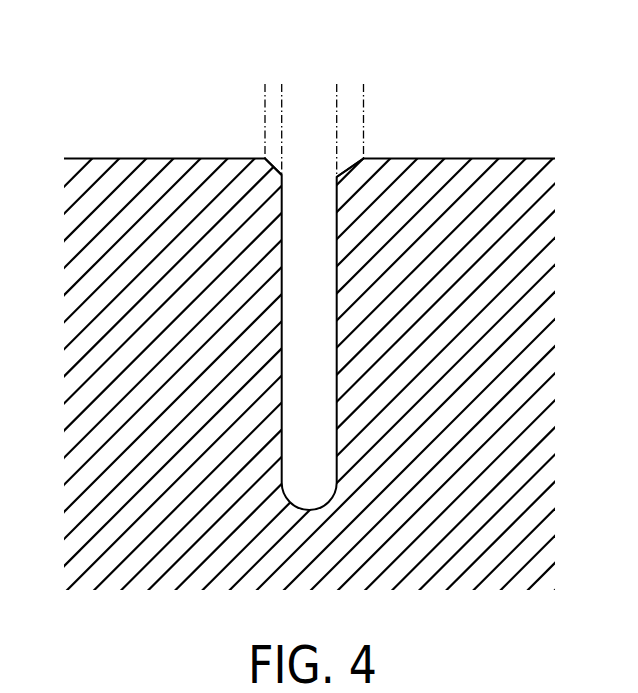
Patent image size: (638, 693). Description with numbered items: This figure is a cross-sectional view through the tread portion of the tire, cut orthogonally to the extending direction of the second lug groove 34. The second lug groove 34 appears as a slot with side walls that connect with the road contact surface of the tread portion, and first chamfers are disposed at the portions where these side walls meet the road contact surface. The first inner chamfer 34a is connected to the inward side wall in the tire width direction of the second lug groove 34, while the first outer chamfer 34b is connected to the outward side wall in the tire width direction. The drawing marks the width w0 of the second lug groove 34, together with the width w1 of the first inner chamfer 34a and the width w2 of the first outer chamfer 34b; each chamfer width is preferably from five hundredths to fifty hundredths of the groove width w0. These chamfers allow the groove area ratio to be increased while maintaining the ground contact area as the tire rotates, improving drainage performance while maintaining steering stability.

The second lug groove 34 is at (337, 238).
The first inner chamfer 34a is at (275, 162).
The first outer chamfer 34b is at (350, 170).
The width of the second lug groove w0 is at (331, 149).
The width of the first inner chamfer w1 is at (288, 77).
The width of the first outer chamfer w2 is at (370, 77).